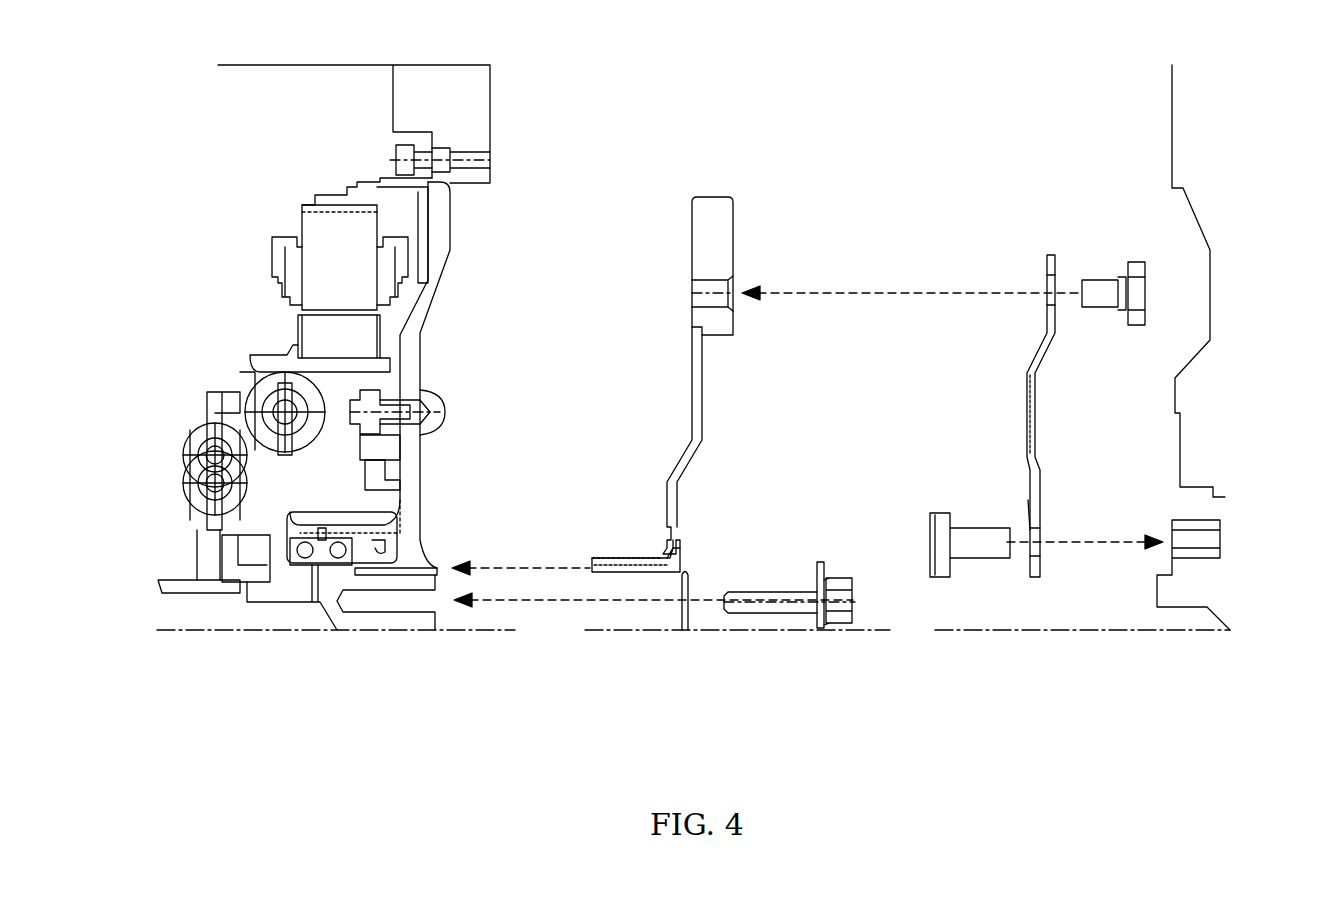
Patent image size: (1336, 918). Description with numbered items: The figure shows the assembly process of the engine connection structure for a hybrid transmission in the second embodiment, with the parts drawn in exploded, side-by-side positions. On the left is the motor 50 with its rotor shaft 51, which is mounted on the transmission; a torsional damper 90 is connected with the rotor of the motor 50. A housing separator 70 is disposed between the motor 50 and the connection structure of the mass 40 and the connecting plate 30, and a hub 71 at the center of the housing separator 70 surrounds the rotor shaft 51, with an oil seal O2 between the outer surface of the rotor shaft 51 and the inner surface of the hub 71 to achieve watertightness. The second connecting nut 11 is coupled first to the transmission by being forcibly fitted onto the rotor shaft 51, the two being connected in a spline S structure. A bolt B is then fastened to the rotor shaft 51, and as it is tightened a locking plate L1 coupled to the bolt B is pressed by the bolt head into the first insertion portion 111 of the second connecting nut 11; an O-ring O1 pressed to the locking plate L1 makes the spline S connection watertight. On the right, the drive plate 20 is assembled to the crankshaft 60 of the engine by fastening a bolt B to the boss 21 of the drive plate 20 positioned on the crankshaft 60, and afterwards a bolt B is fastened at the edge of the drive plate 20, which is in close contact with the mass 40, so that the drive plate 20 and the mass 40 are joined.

The second connecting nut 11 is at (620, 558).
The first insertion portion 111 is at (678, 563).
The drive plate 20 is at (1030, 412).
The boss 21 is at (1032, 565).
The connecting plate 30 is at (705, 412).
The mass 40 is at (724, 236).
The motor 50 is at (298, 216).
The rotor shaft 51 is at (418, 620).
The crankshaft 60 is at (1200, 590).
The housing separator 70 is at (450, 243).
The hub 71 is at (310, 522).
The torsional damper 90 is at (210, 410).
The bolt B is at (796, 600).
The locking plate L1 is at (820, 575).
The O-ring O1 is at (683, 605).
The oil seal O2 is at (428, 545).
The spline S is at (427, 570).